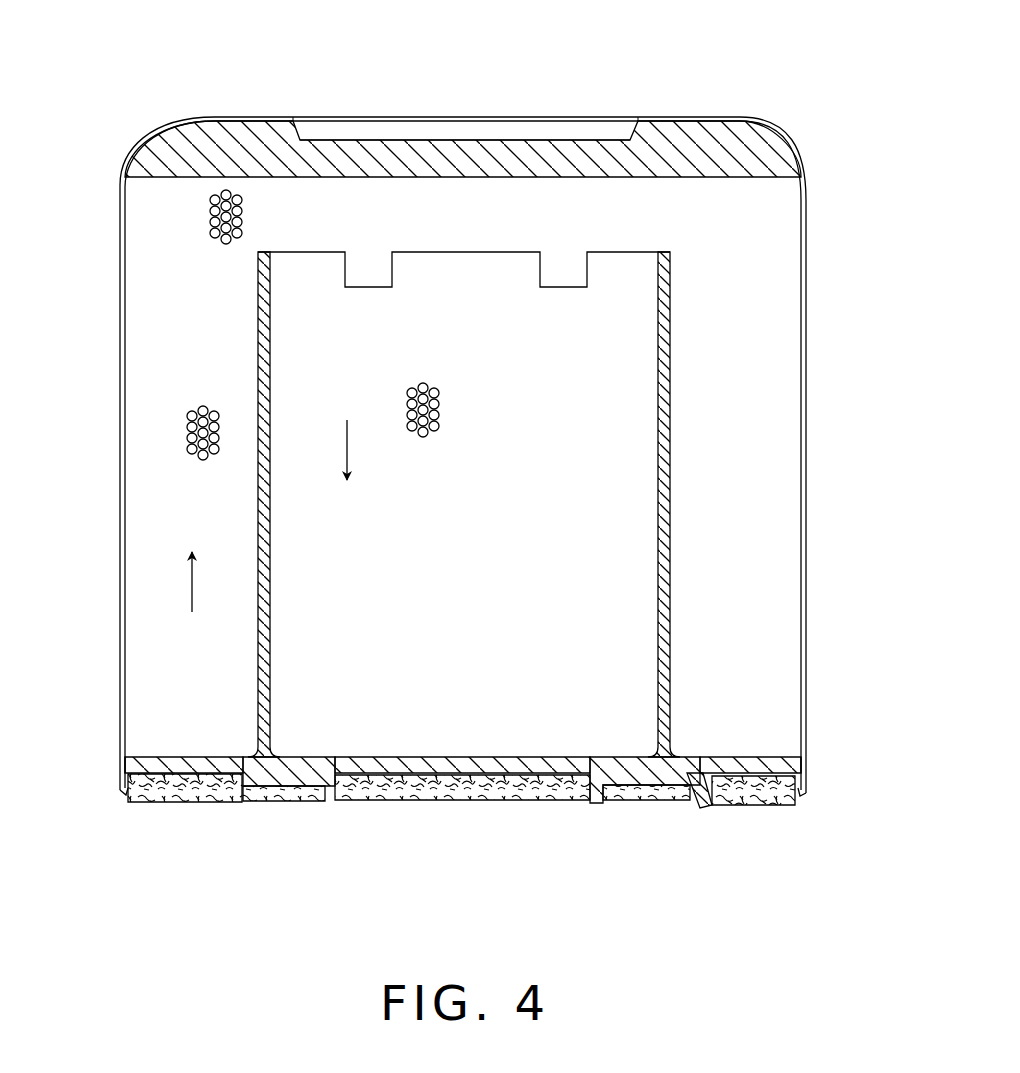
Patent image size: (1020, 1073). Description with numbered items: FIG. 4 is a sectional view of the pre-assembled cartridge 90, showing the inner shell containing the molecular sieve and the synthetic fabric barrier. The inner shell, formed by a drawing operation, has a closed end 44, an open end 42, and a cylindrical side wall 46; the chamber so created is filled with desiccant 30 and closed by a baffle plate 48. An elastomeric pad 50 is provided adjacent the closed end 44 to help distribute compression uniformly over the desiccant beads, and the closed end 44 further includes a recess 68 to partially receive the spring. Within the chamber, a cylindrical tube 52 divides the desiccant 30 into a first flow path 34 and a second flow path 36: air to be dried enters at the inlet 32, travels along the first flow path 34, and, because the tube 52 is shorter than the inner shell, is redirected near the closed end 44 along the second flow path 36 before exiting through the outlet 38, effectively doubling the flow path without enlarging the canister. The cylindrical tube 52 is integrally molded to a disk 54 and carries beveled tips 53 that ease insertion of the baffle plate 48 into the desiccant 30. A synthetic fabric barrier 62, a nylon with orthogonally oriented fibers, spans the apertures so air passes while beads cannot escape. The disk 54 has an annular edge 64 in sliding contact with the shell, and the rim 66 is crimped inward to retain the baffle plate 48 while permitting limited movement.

The desiccant 30 is at (440, 418).
The inlet 32 is at (152, 757).
The first flow path 34 is at (192, 583).
The second flow path 36 is at (350, 447).
The outlet 38 is at (425, 758).
The open end 42 is at (388, 812).
The closed end 44 is at (224, 110).
The cylindrical side wall 46 is at (120, 520).
The baffle plate 48 is at (468, 758).
The elastomeric pad 50 is at (520, 165).
The cylindrical tube 52 is at (256, 415).
The beveled tips 53 is at (668, 252).
The disk 54 is at (694, 758).
The synthetic fabric barrier 62 is at (198, 802).
The annular edge 64 is at (124, 762).
The rim 66 is at (128, 793).
The recess 68 is at (400, 139).
The pre-assembled cartridge 90 is at (798, 132).